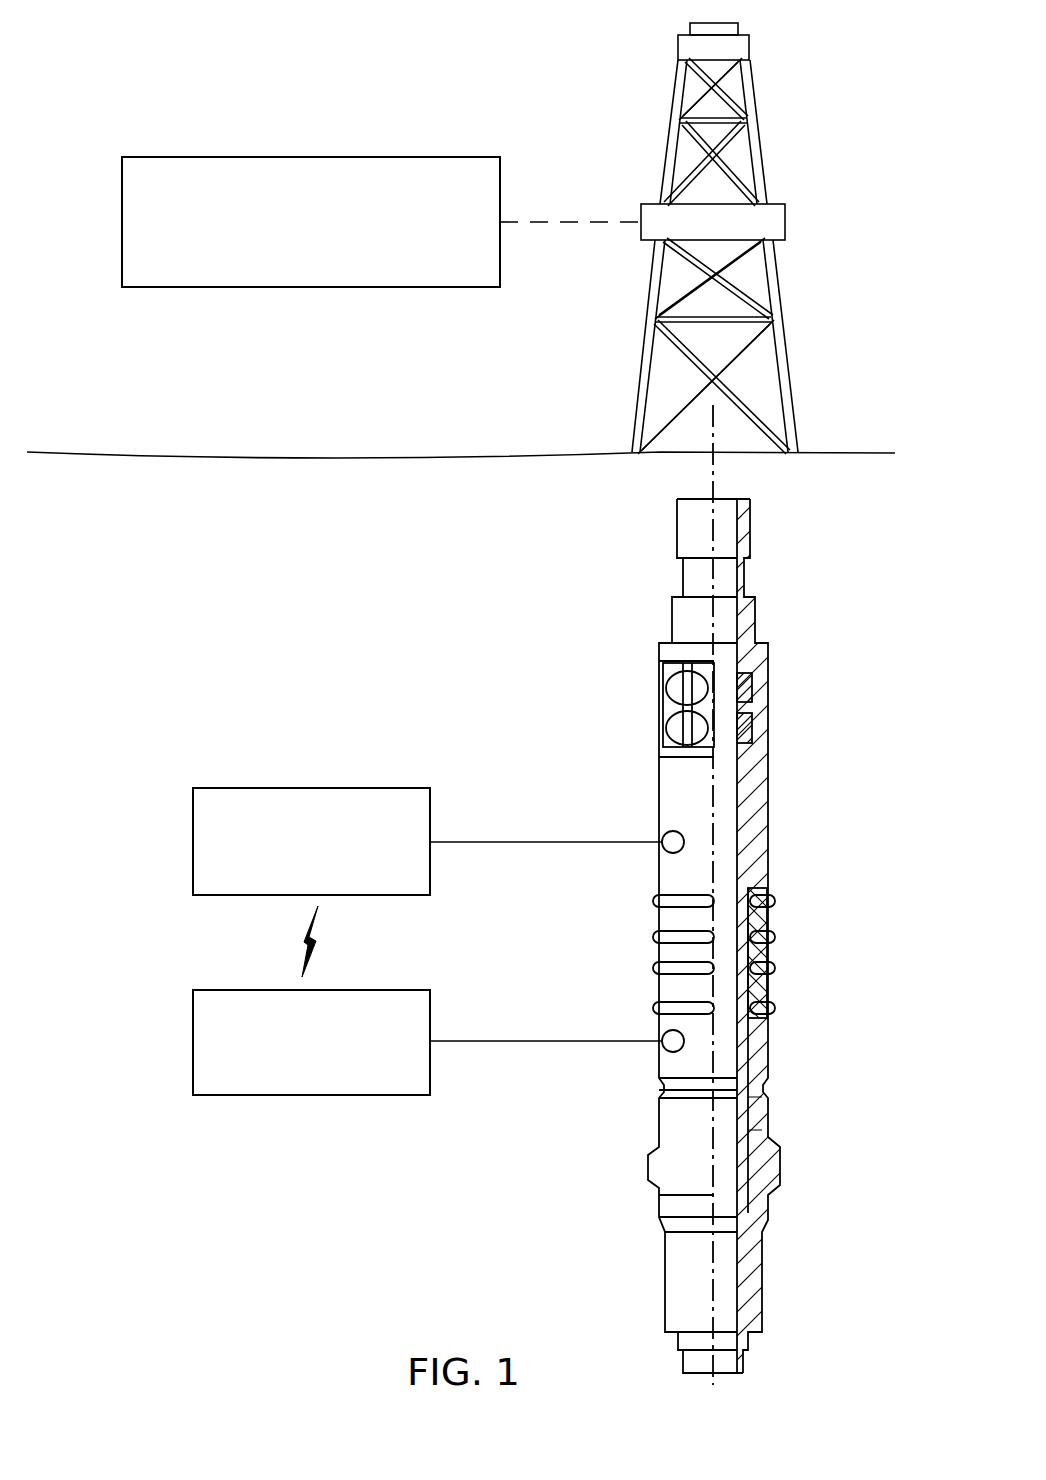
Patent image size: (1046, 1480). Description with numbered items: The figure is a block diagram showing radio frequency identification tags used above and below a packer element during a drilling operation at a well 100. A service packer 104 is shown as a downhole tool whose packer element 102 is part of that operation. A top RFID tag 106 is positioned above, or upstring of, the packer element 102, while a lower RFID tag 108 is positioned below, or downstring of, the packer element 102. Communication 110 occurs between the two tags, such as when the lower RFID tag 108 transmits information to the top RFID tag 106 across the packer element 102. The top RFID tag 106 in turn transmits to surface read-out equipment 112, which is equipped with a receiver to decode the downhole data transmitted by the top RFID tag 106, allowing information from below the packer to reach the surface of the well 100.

The well 100 is at (184, 94).
The packer element 102 is at (598, 846).
The service packer 104 is at (724, 920).
The top RFID tag 106 is at (193, 853).
The lower RFID tag 108 is at (193, 1056).
The communication 110 is at (306, 952).
The surface read-out equipment 112 is at (122, 212).